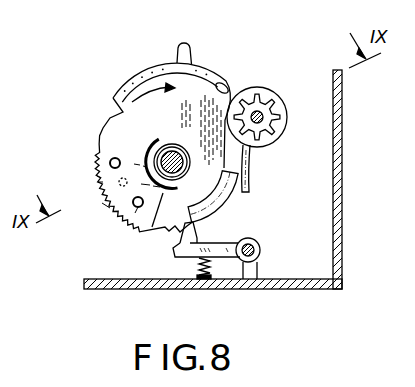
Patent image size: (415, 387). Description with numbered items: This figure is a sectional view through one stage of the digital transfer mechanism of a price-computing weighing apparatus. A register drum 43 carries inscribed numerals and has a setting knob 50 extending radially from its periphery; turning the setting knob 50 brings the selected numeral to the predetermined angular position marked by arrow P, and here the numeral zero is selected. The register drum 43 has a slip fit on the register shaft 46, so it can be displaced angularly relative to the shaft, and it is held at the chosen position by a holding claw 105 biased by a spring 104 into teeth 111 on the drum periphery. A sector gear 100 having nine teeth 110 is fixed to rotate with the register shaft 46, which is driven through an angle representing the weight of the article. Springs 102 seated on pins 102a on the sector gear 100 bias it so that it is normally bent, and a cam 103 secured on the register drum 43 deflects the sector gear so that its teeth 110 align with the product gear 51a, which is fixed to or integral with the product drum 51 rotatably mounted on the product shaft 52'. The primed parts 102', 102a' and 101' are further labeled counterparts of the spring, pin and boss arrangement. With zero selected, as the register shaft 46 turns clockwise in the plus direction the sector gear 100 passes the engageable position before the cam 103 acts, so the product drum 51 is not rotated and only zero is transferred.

The preselected angular position P is at (111, 78).
The sector gear 100 is at (162, 147).
The setting knob 50 is at (191, 56).
The register drum 43 is at (222, 90).
The register shaft 46 is at (172, 181).
The pin 102' is at (81, 149).
The pin hole 102a' is at (84, 169).
The teeth 110 is at (97, 185).
The springs 102 is at (129, 229).
The pins 102a is at (109, 231).
The ratchet segment 101' is at (94, 217).
The product drum 51 is at (284, 126).
The product shaft 52' is at (264, 95).
The product gear 51a is at (252, 168).
The cam 103 is at (242, 190).
The holding claw 105 is at (226, 245).
The teeth 111 is at (172, 230).
The spring 104 is at (197, 265).